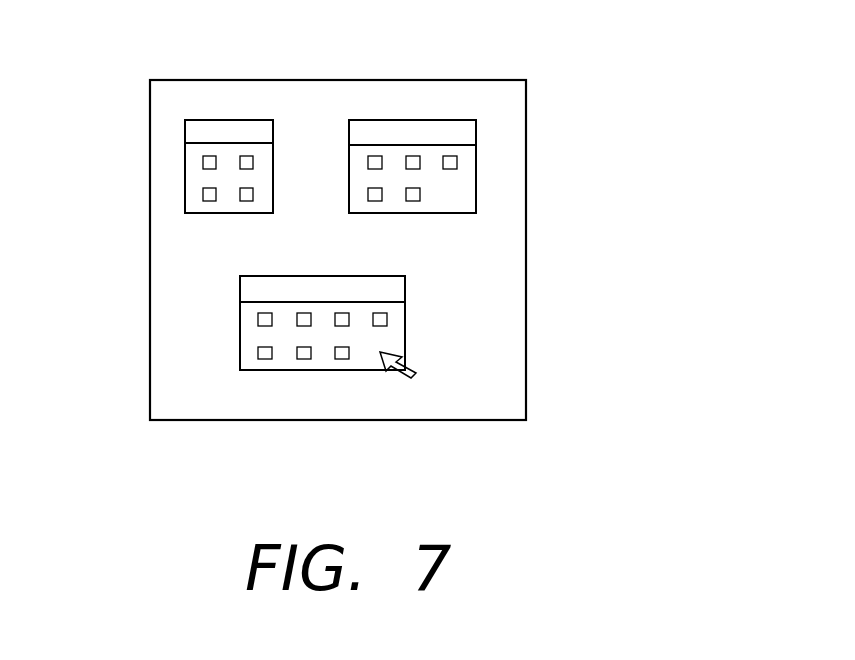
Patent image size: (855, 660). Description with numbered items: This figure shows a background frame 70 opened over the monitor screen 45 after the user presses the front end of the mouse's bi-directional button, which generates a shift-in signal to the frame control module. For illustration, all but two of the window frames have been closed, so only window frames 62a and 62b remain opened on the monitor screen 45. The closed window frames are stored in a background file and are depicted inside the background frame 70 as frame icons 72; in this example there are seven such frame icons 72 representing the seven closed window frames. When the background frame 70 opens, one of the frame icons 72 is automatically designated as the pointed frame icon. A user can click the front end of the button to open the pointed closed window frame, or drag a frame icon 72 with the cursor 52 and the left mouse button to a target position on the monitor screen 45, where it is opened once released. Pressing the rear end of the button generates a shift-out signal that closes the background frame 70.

The monitor screen 45 is at (526, 248).
The window frame 62a is at (183, 178).
The window frame 62b is at (422, 120).
The background frame 70 is at (365, 384).
The frame icons 72 is at (387, 318).
The cursor 52 is at (415, 372).